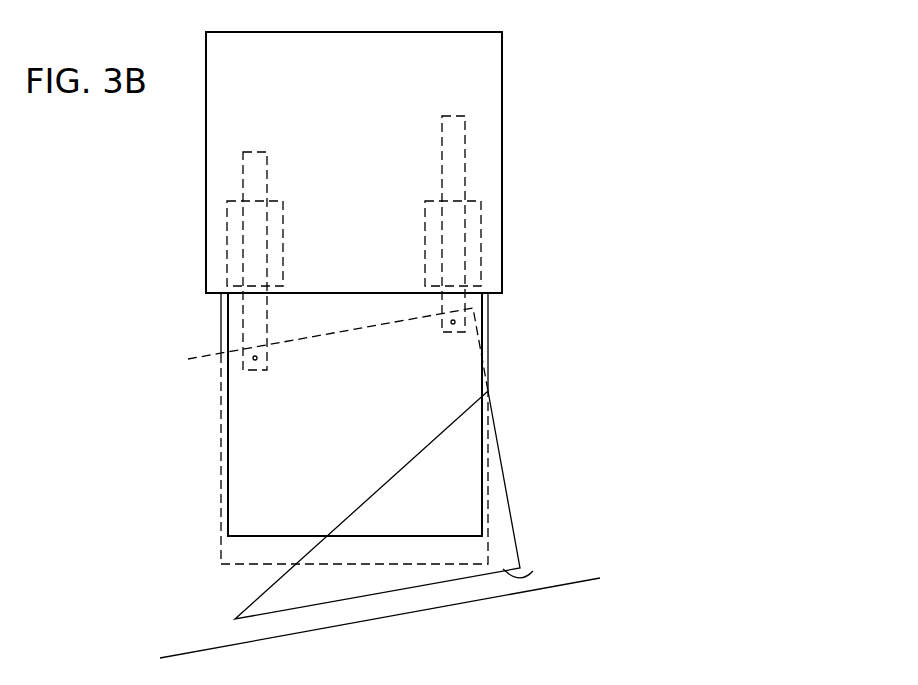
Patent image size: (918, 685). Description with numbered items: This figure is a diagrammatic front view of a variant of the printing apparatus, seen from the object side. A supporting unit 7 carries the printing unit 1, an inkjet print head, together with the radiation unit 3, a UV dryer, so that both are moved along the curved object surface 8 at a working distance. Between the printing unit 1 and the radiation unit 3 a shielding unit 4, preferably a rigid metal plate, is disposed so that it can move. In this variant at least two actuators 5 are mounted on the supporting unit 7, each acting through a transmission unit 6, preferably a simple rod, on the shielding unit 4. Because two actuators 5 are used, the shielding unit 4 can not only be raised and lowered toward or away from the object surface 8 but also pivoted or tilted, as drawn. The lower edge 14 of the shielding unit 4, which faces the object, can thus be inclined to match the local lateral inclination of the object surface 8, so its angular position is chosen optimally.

The printing unit 1 is at (222, 435).
The radiation unit 3 is at (483, 437).
The shielding unit 4 is at (232, 602).
The actuator 5 is at (237, 233).
The transmission unit 6 is at (250, 175).
The supporting unit 7 is at (487, 78).
The object surface 8 is at (572, 578).
The edge 14 is at (533, 571).